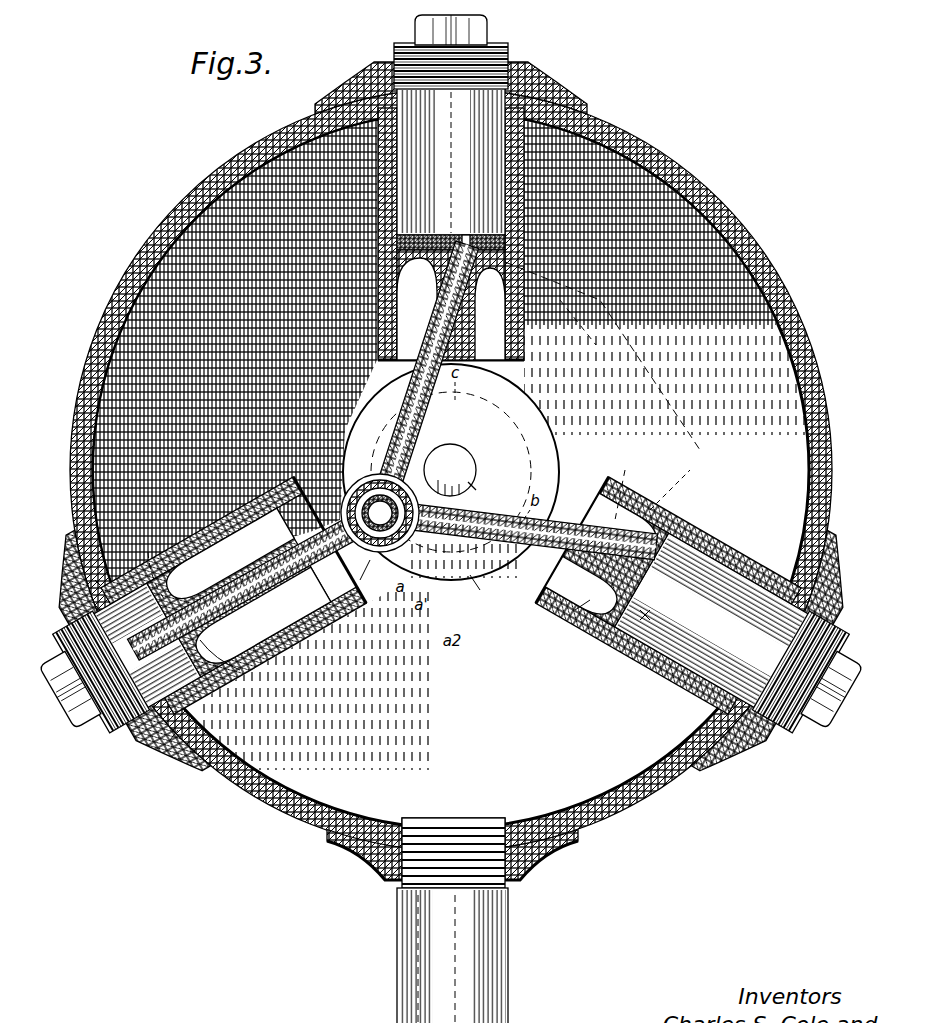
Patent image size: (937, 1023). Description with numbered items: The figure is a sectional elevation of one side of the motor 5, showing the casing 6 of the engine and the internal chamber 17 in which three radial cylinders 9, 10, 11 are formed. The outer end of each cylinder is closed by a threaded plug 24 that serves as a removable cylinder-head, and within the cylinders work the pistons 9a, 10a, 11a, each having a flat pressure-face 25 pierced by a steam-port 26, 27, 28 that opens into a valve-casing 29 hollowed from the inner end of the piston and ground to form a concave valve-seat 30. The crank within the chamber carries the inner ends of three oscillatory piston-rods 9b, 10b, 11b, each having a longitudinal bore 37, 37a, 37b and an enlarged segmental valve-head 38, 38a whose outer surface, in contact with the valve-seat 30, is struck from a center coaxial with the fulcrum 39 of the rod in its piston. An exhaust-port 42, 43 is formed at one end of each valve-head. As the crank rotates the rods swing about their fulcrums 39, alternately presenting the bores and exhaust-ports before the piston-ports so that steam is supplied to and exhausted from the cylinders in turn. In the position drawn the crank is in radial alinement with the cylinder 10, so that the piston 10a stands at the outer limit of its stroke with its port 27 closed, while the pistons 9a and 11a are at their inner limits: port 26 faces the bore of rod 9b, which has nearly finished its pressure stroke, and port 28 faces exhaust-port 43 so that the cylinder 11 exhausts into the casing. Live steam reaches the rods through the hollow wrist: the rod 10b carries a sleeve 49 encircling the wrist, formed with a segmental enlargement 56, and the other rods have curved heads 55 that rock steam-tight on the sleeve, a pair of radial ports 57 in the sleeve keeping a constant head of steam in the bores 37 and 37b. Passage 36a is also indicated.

The motor 5 is at (693, 210).
The casing 6 is at (248, 168).
The cylinder 9 is at (451, 211).
The piston 9a is at (440, 235).
The piston-rod 9b is at (408, 372).
The cylinder 10 is at (214, 607).
The piston 10a is at (170, 740).
The piston-rod 10b is at (248, 586).
The cylinder 11 is at (688, 607).
The piston 11a is at (640, 620).
The piston-rod 11b is at (500, 520).
The internal chamber 17 is at (352, 650).
The threaded plug 24 is at (478, 30).
The pressure-face 25 is at (392, 224).
The steam-port 26 is at (465, 248).
The steam-port 27 is at (96, 606).
The steam-port 28 is at (655, 621).
The valve-casing 29 is at (408, 456).
The valve-seat 30 is at (394, 258).
The passage 36a is at (679, 486).
The longitudinal bore 37 is at (451, 472).
The longitudinal bore 37a is at (348, 573).
The longitudinal bore 37b is at (488, 588).
The valve-head 38 is at (506, 262).
The valve-head 38a is at (240, 670).
The fulcrum 39 is at (504, 303).
The exhaust-port 42 is at (96, 580).
The exhaust-port 43 is at (575, 610).
The sleeve 49 is at (345, 478).
The curved head 55 is at (451, 470).
The segmental enlargement 56 is at (384, 470).
The radial ports 57 is at (482, 493).